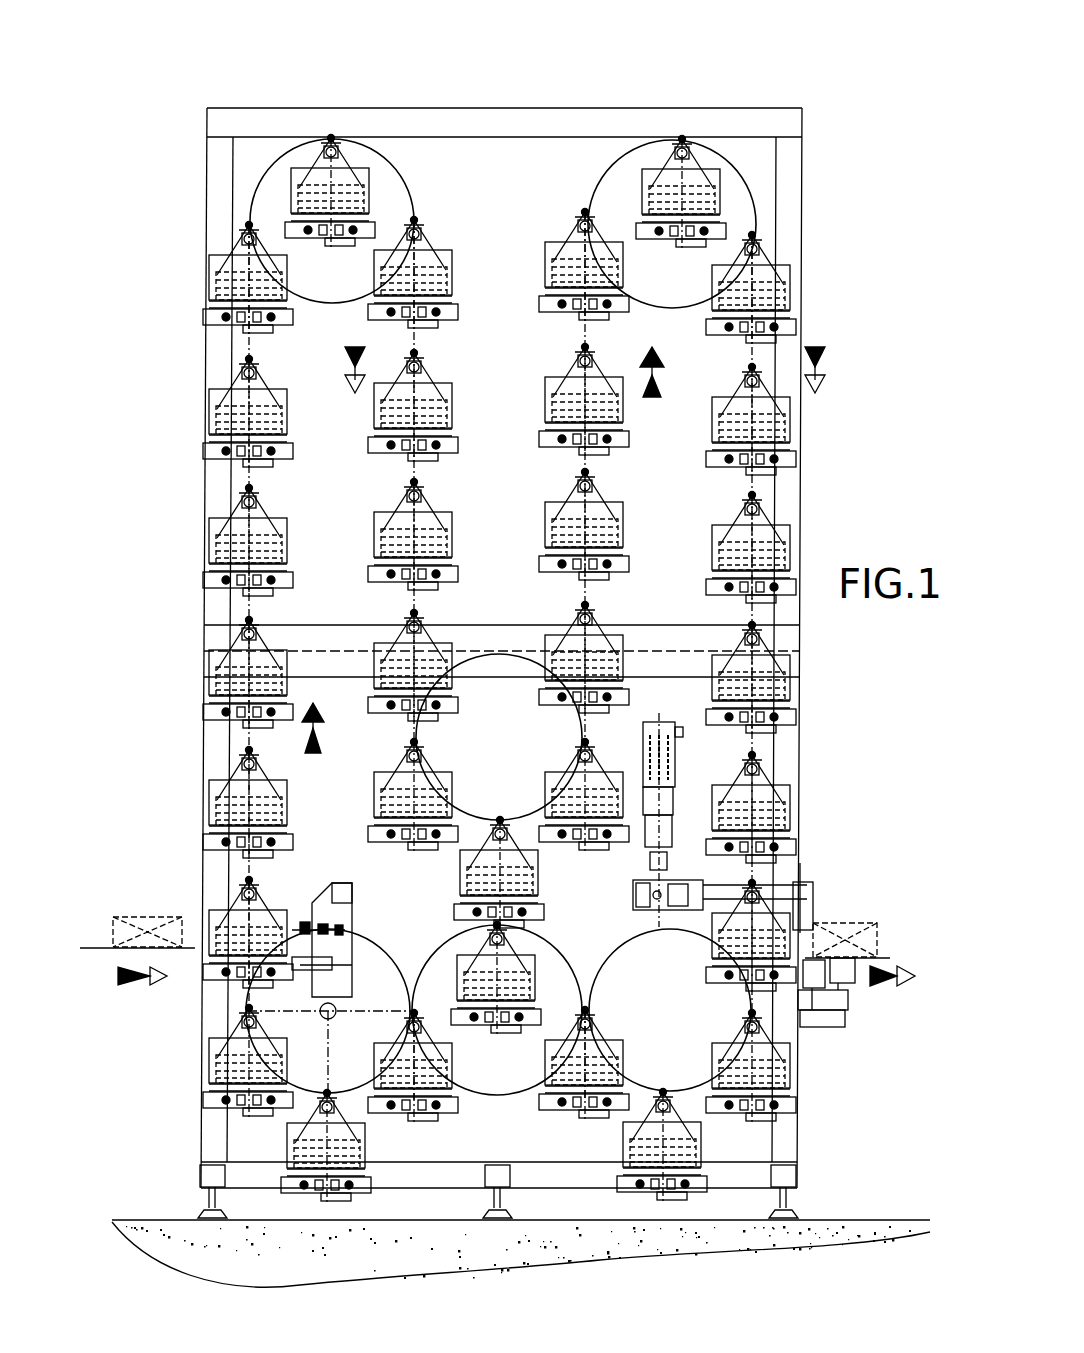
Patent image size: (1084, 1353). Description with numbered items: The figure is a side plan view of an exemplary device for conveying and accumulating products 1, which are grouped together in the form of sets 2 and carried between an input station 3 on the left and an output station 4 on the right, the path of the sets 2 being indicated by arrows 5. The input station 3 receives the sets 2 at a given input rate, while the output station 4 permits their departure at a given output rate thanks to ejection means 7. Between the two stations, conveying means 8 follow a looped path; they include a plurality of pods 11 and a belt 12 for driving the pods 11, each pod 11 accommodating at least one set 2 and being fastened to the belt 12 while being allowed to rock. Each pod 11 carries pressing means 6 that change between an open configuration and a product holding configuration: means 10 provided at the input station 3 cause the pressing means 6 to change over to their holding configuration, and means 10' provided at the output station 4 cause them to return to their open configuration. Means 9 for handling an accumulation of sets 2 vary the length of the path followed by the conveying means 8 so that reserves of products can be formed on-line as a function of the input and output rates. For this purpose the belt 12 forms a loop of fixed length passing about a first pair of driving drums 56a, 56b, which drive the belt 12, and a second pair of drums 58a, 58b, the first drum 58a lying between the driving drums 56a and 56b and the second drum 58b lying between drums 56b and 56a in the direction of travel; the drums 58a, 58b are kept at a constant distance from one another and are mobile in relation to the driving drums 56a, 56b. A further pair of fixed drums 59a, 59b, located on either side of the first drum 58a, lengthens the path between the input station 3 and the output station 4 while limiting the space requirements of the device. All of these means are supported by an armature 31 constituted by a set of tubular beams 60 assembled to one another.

The products 1 is at (113, 932).
The sets 2 is at (493, 702).
The input station 3 is at (190, 1020).
The output station 4 is at (832, 866).
The arrows 5 is at (345, 357).
The pressing means 6 is at (213, 262).
The ejection means 7 is at (648, 915).
The conveying means 8 is at (698, 76).
The means for handling an accumulation of sets 9 is at (452, 850).
The means for causing the pressing means to change over to holding configuration 10 is at (352, 940).
The means for causing the pressing means to change over to open configuration 10' is at (860, 1014).
The pod 11 is at (218, 316).
The belt 12 is at (420, 330).
The armature 31 is at (183, 583).
The first driving drum 56a is at (350, 1086).
The second driving drum 56b is at (693, 1052).
The first drum of the second pair 58a is at (487, 702).
The second drum of the second pair 58b is at (515, 1074).
The fixed drum 59a is at (352, 284).
The fixed drum 59b is at (697, 284).
The tubular beams 60 is at (215, 752).